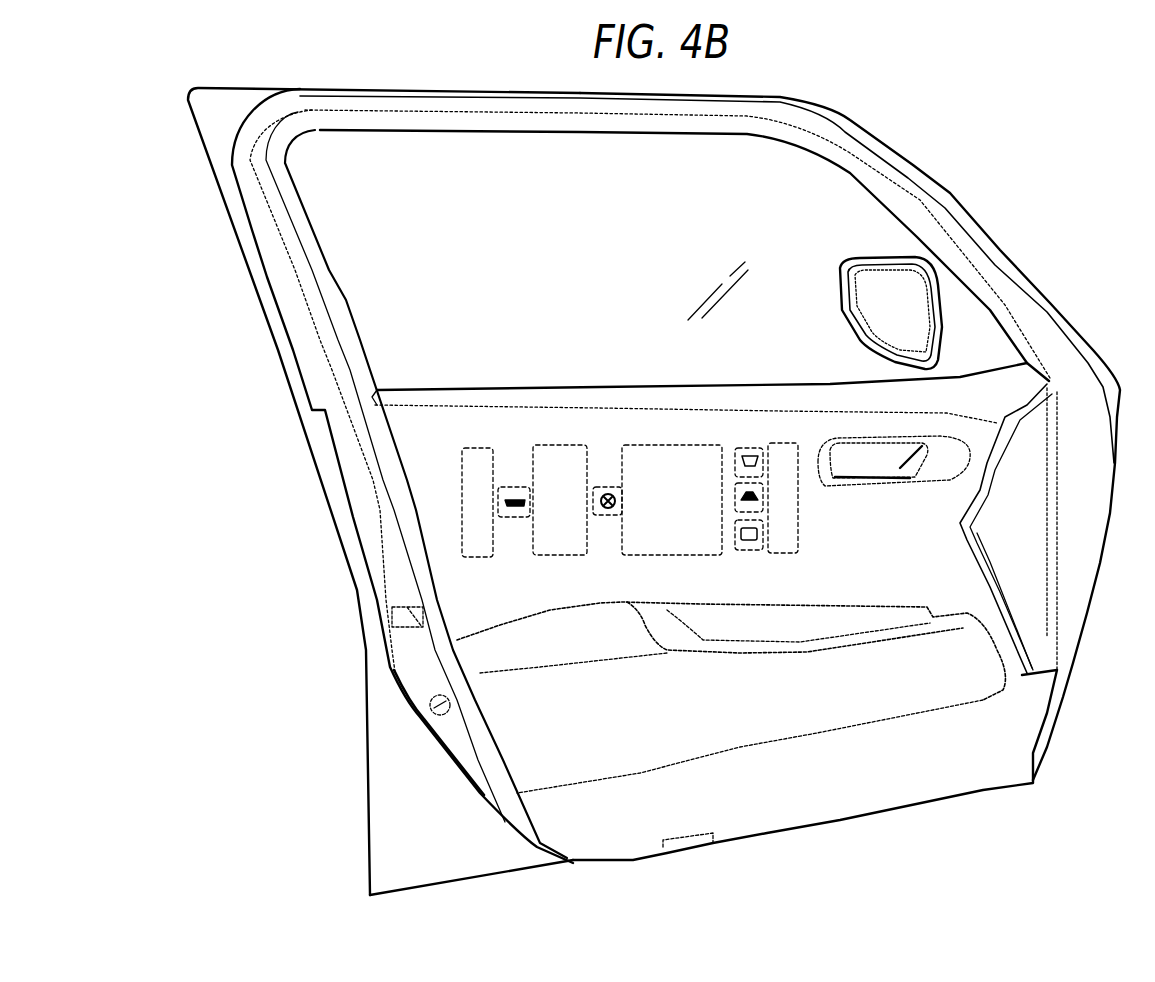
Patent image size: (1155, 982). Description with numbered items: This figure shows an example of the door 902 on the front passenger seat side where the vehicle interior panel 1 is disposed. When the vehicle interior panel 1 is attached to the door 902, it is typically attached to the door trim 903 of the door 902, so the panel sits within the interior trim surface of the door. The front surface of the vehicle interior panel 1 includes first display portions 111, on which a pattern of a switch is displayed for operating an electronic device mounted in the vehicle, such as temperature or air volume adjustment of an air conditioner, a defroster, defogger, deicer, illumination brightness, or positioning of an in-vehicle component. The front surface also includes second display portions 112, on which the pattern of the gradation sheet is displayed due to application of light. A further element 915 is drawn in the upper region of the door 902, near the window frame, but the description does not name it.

The vehicle interior panel 1 is at (617, 458).
The first display portion 111 is at (745, 450).
The second display portion 112 is at (474, 447).
The door 902 is at (387, 842).
The door trim 903 is at (427, 487).
The speaker 915 is at (848, 297).